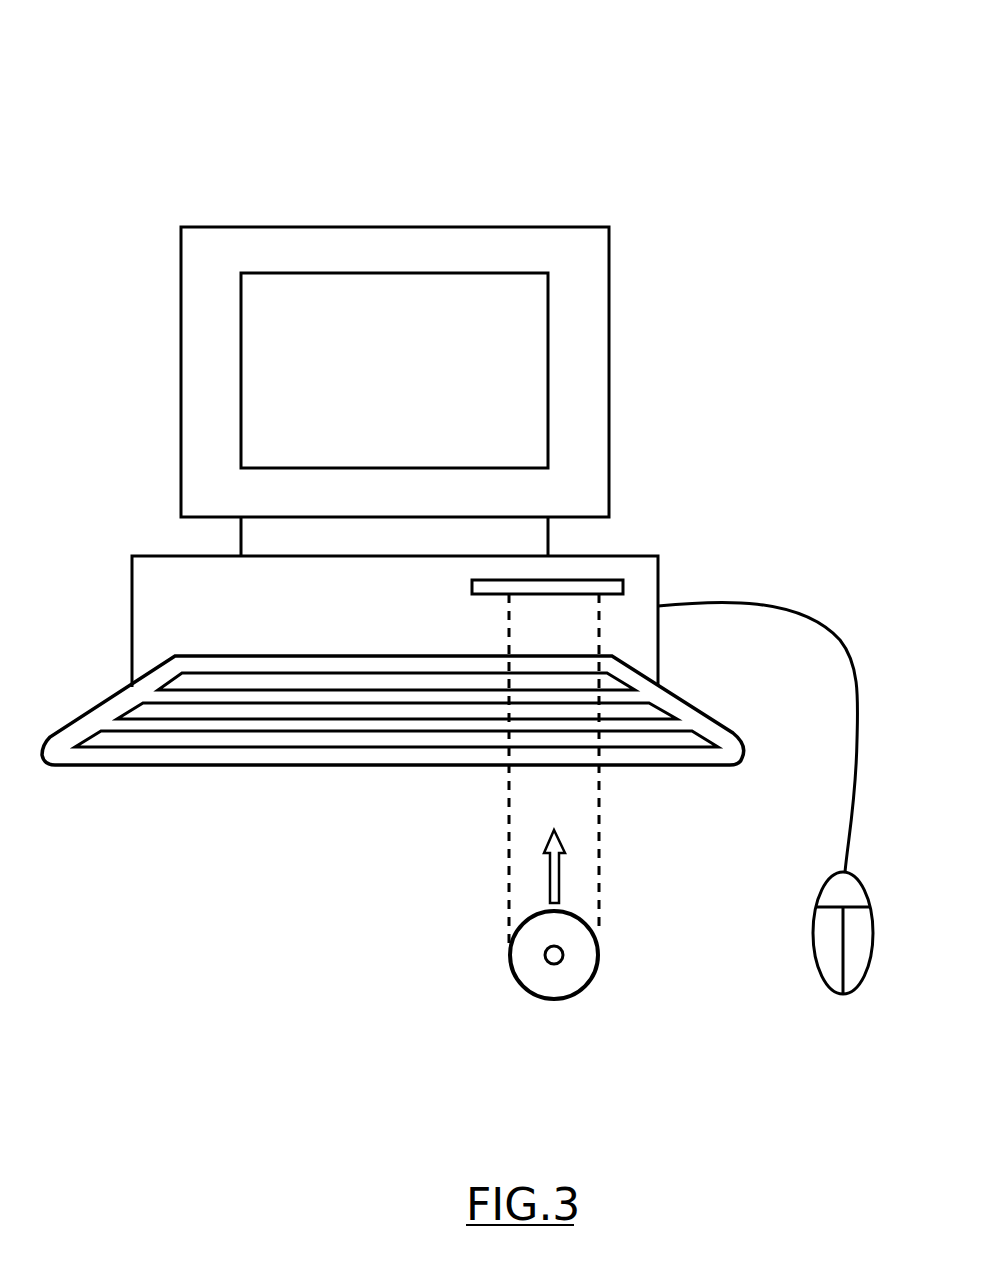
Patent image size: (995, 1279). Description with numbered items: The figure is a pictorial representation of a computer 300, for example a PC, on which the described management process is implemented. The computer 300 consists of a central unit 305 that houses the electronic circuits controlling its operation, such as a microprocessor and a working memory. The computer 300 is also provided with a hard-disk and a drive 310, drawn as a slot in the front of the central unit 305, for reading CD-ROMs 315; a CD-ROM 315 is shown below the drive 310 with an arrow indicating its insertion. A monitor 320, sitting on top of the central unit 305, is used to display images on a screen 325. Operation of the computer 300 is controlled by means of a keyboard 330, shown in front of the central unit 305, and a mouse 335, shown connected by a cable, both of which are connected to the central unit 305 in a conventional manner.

The computer 300 is at (215, 48).
The central unit 305 is at (159, 555).
The drive 310 is at (605, 579).
The CD-ROM 315 is at (527, 920).
The monitor 320 is at (289, 226).
The screen 325 is at (520, 323).
The keyboard 330 is at (203, 766).
The mouse 335 is at (827, 883).